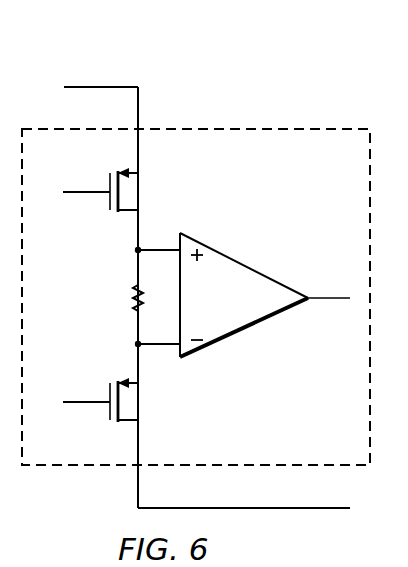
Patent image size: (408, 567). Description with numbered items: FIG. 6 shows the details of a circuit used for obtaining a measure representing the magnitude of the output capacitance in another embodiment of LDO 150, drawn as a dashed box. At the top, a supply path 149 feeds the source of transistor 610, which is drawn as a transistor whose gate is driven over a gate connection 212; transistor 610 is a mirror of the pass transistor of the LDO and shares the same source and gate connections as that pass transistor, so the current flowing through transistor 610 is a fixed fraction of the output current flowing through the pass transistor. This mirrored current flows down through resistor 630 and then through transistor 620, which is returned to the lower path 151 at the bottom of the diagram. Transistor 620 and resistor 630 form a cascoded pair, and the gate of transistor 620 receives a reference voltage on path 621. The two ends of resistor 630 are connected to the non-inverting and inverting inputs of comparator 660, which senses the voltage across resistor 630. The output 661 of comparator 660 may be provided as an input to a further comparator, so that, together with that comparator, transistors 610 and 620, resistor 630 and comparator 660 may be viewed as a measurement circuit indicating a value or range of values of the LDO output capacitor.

The supply voltage path 149 is at (84, 86).
The LDO 150 is at (286, 129).
The ground path 151 is at (326, 509).
The gate connection path 212 is at (85, 194).
The transistor 610 is at (110, 181).
The transistor 620 is at (110, 411).
The path 621 is at (82, 400).
The resistor 630 is at (133, 293).
The comparator 660 is at (245, 265).
The output 661 is at (327, 296).